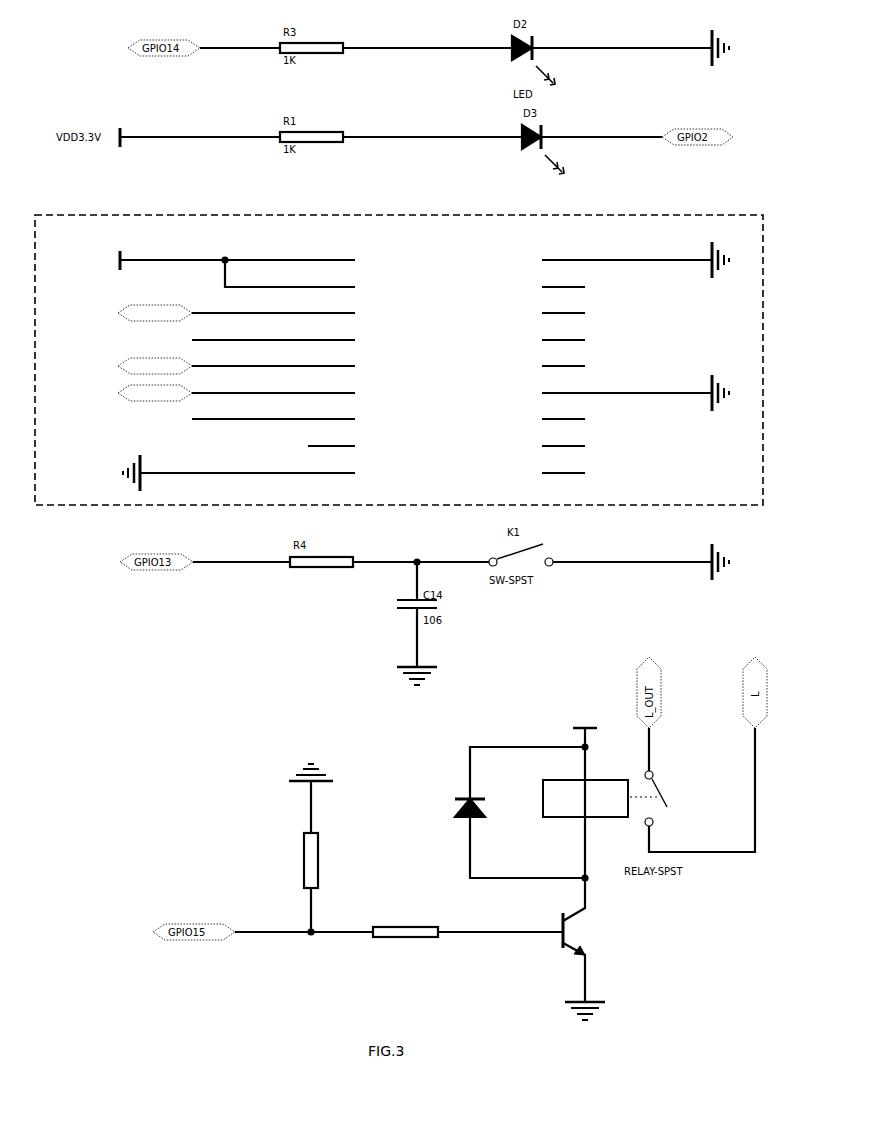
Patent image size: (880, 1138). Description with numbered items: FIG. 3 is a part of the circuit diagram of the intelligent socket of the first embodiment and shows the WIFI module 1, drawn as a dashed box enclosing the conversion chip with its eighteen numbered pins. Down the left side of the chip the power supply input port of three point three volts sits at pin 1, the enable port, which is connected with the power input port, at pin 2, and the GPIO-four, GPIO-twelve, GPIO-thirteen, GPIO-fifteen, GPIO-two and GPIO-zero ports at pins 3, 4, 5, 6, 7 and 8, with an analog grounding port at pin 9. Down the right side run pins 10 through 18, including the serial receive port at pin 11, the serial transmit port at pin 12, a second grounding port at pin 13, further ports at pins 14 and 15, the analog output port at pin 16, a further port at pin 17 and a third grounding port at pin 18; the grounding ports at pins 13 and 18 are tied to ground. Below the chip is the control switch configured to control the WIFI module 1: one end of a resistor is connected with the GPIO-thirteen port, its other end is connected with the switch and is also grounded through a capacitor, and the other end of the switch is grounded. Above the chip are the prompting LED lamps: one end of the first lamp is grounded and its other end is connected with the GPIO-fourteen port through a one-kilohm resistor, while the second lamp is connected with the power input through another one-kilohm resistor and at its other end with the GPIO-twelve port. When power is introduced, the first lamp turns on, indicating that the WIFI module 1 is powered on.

The WIFI module 1 is at (745, 215).
The second control module 2 is at (290, 273).
The GPIO4 pin 3 is at (273, 306).
The GPIO12 pin 4 is at (273, 333).
The GPIO13 pin 5 is at (273, 359).
The GPIO15 pin 6 is at (273, 386).
The GPIO2 pin 7 is at (273, 412).
The GPIO0 pin 8 is at (331, 439).
The AGND pin 9 is at (239, 473).
The GPIO1 pin 10 is at (563, 466).
The URXD pin 11 is at (563, 439).
The UTXD pin 12 is at (563, 412).
The CGND pin 13 is at (635, 393).
The GPIO0 pin 14 is at (563, 359).
The RST pin 15 is at (563, 333).
The TOUT pin 16 is at (563, 306).
The GPIO6 pin 17 is at (563, 280).
The BGND pin 18 is at (635, 260).